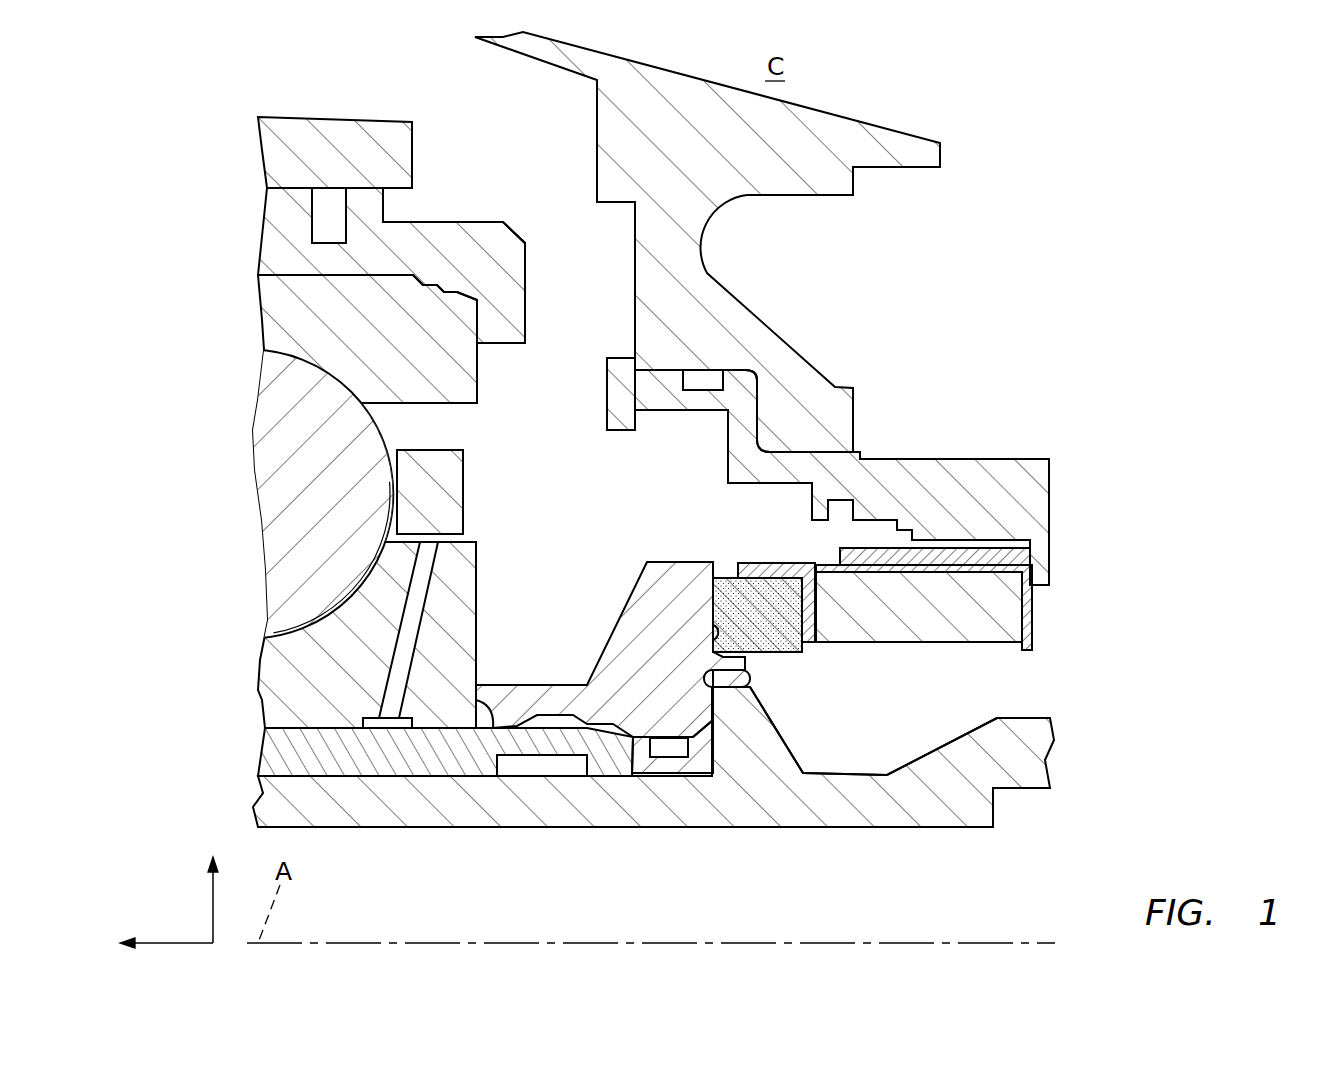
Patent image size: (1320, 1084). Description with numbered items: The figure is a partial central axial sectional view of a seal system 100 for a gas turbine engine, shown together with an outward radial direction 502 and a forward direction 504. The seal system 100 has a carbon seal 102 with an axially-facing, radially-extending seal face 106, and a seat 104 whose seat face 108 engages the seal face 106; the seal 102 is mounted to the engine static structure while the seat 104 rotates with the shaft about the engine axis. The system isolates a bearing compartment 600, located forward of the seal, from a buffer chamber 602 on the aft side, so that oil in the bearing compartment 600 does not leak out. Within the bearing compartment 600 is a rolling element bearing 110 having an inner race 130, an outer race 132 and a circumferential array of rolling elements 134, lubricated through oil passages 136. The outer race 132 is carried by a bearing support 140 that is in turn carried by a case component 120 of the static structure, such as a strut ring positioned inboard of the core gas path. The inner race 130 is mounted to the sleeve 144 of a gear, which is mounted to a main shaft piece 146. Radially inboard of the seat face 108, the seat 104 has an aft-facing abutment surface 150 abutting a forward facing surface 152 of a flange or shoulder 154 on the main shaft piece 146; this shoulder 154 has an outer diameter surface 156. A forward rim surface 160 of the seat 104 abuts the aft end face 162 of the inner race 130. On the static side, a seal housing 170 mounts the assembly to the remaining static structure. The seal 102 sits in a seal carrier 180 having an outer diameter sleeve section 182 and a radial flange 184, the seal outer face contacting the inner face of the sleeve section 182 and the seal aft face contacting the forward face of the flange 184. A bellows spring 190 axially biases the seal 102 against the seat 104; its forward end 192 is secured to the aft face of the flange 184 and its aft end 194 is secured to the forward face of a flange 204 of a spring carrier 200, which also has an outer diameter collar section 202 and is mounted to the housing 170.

The seal system 100 is at (596, 488).
The seal 102 is at (783, 658).
The seat 104 is at (645, 600).
The seal face 106 is at (705, 607).
The seat face 108 is at (716, 633).
The bearing 110 is at (485, 410).
The case component 120 is at (698, 310).
The inner race 130 is at (272, 695).
The outer race 132 is at (283, 313).
The rolling elements 134 is at (292, 490).
The passages 136 is at (398, 653).
The bearing support 140 is at (447, 256).
The sleeve 144 is at (292, 755).
The main shaft piece 146 is at (407, 812).
The abutment surface 150 is at (713, 717).
The forward facing surface 152 is at (707, 707).
The flange or shoulder 154 is at (760, 733).
The outer diameter surface 156 is at (737, 673).
The forward rim surface 160 is at (477, 700).
The aft end face 162 is at (477, 593).
The seal housing 170 is at (937, 485).
The seal carrier 180 is at (800, 575).
The sleeve section 182 is at (755, 565).
The radial flange 184 is at (807, 592).
The spring 190 is at (935, 607).
The forward end 192 is at (806, 632).
The aft end 194 is at (1035, 600).
The spring carrier 200 is at (1030, 541).
The collar section 202 is at (943, 555).
The flange 204 is at (1035, 630).
The outward radial direction 502 is at (212, 895).
The forward direction 504 is at (152, 943).
The bearing compartment 600 is at (533, 479).
The buffer chamber 602 is at (1123, 704).